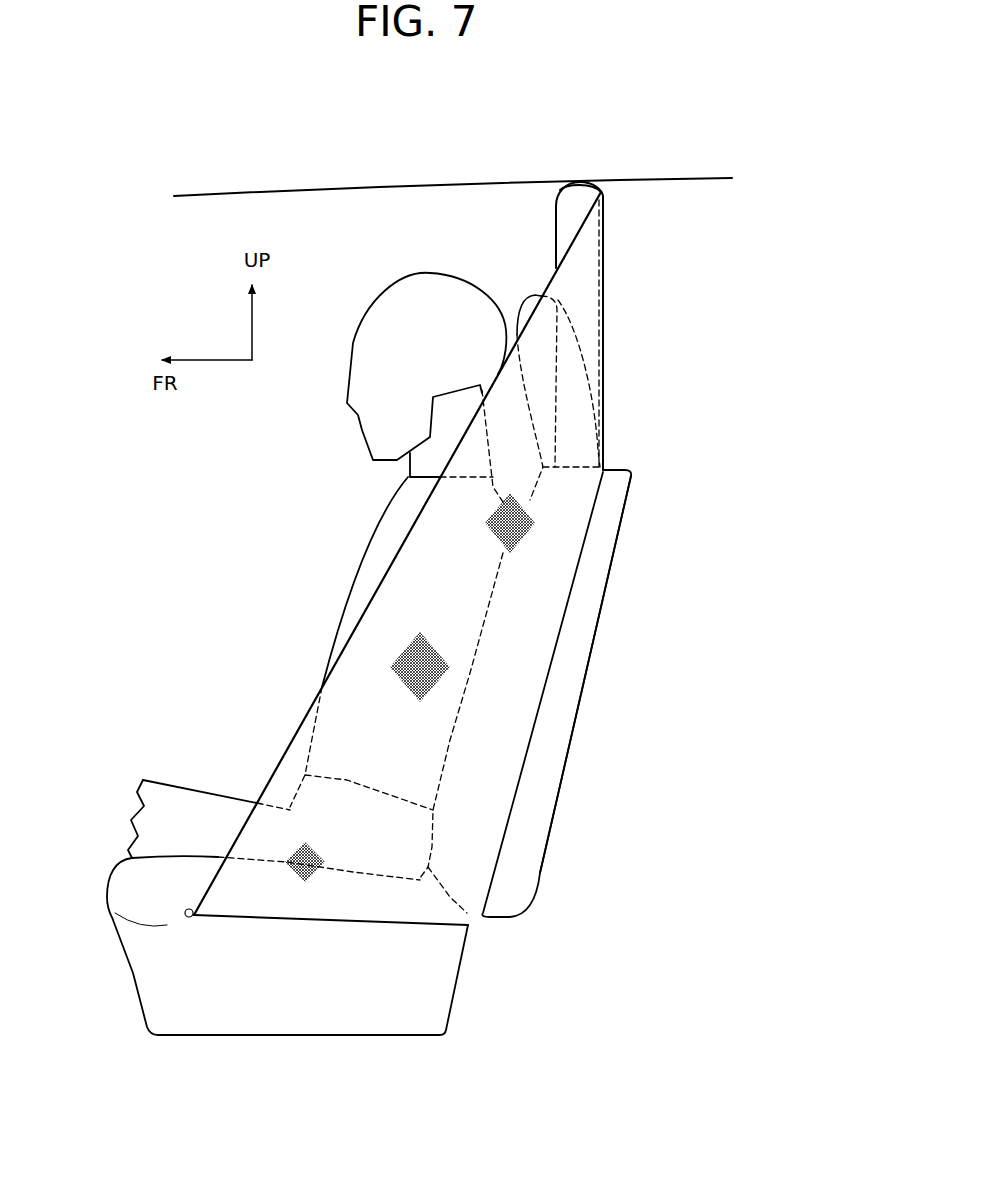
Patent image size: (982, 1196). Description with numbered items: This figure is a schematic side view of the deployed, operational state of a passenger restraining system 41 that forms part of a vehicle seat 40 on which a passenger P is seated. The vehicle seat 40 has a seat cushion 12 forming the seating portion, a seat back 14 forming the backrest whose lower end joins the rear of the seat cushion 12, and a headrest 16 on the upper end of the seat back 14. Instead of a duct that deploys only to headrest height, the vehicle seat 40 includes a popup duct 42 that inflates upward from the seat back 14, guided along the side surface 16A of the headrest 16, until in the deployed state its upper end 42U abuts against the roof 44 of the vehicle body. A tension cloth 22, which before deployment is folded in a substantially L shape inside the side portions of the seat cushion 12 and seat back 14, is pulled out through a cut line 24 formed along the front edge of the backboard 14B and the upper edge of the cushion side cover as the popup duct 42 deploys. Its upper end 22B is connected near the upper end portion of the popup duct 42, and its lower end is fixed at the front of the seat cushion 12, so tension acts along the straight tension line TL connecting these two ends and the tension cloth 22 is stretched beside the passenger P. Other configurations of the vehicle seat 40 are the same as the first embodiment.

The seat cushion 12 is at (175, 850).
The seat back 14 is at (628, 512).
The backboard 14B is at (598, 585).
The headrest 16 is at (535, 295).
The side surface of the headrest 16A is at (578, 410).
The tension cloth 22 is at (392, 588).
The upper end of the tension cloth 22B is at (595, 230).
The cut line 24 is at (545, 695).
The vehicle seat 40 is at (202, 525).
The passenger restraining system 41 is at (293, 720).
The popup duct 42 is at (411, 508).
The upper end of the popup duct 42U is at (580, 181).
The roof 44 is at (342, 190).
The passenger P is at (342, 535).
The tension line TL is at (360, 621).